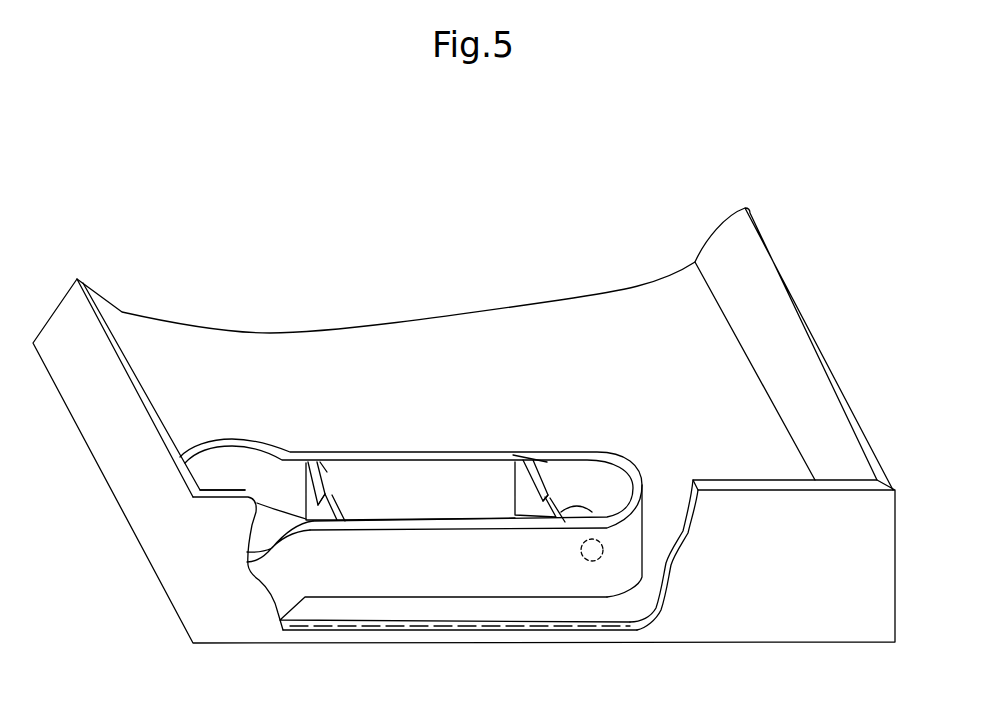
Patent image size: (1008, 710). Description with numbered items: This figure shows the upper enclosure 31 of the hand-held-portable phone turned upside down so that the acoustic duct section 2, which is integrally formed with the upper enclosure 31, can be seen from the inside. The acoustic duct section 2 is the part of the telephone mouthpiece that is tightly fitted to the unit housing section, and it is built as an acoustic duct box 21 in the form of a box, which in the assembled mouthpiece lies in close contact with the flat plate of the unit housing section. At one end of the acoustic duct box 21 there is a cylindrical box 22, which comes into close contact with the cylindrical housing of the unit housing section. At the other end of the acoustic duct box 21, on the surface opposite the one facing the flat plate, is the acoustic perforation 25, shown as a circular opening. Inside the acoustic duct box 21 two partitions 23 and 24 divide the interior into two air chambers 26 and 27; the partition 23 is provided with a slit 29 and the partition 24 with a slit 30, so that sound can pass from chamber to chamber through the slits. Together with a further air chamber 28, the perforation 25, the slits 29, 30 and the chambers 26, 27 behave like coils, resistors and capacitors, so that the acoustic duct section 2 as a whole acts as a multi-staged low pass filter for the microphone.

The acoustic duct section 2 is at (390, 587).
The acoustic duct box 21 is at (393, 453).
The cylindrical box 22 is at (210, 438).
The partition 23 is at (545, 460).
The partition 24 is at (318, 462).
The acoustic perforation 25 is at (592, 561).
The air chamber 26 is at (593, 473).
The air chamber 27 is at (432, 475).
The air chamber 28 is at (242, 460).
The slit 29 is at (537, 497).
The slit 30 is at (330, 491).
The upper enclosure 31 is at (820, 330).